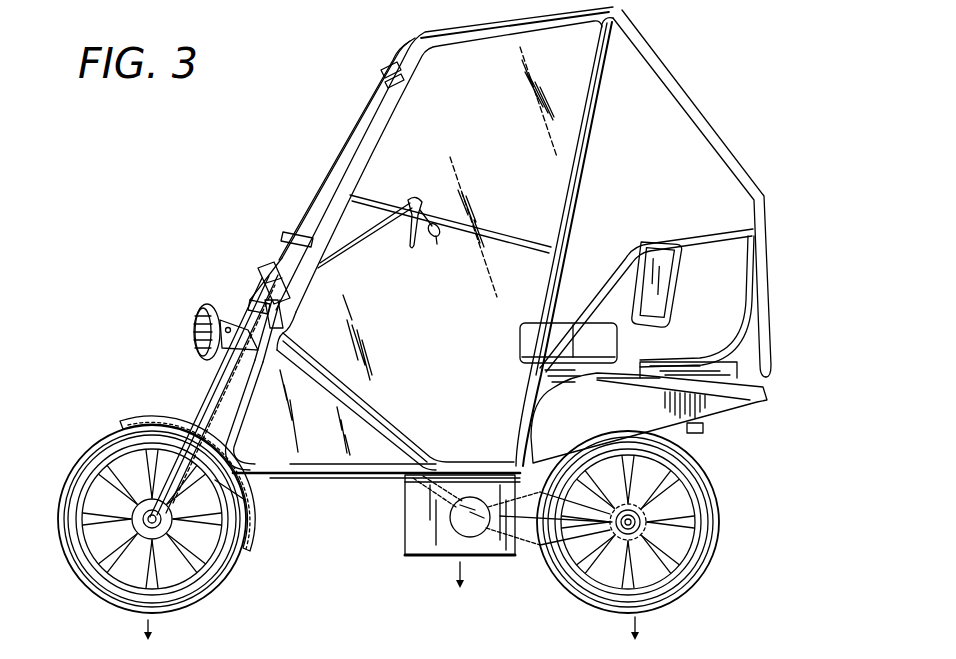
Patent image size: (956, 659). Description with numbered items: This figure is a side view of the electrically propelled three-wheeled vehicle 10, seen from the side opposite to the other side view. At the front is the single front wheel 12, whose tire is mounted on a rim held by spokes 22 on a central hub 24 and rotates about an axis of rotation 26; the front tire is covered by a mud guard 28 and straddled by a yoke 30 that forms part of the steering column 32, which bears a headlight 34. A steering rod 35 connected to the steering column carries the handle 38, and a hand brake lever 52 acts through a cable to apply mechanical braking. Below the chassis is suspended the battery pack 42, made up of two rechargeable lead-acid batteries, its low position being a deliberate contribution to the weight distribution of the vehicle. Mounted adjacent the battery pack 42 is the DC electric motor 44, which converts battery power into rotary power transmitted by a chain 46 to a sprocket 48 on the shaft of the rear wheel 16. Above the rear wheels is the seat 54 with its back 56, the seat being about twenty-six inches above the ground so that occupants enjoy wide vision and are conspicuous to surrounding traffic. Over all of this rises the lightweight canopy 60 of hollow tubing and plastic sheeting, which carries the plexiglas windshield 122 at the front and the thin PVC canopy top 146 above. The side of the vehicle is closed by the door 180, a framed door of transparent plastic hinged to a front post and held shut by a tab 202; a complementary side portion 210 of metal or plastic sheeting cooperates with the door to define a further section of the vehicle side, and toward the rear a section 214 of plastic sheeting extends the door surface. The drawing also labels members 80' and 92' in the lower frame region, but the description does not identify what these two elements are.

The vehicle 10 is at (190, 283).
The front wheel 12 is at (141, 538).
The rear wheel 16 is at (702, 582).
The spokes 22 is at (130, 519).
The central hub 24 is at (176, 524).
The axis of rotation 26 is at (92, 519).
The mud guard 28 is at (140, 418).
The yoke 30 is at (208, 397).
The steering column 32 is at (263, 294).
The headlight 34 is at (192, 332).
The steering rod 35 is at (373, 228).
The handle 38 is at (440, 241).
The battery pack 42 is at (410, 515).
The DC electric motor 44 is at (457, 523).
The chain 46 is at (518, 552).
The sprocket 48 is at (570, 562).
The hand brake lever 52 is at (422, 246).
The seat 54 is at (530, 327).
The back 56 is at (663, 233).
The canopy 60 is at (509, 233).
The frame member 80' is at (260, 512).
The cross member 92' is at (436, 493).
The windshield 122 is at (360, 117).
The canopy top 146 is at (405, 657).
The door 180 is at (450, 319).
The tab 202 is at (522, 400).
The side portion 210 is at (298, 475).
The section 214 is at (628, 43).